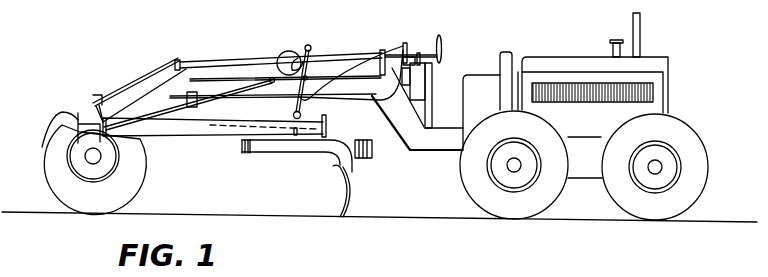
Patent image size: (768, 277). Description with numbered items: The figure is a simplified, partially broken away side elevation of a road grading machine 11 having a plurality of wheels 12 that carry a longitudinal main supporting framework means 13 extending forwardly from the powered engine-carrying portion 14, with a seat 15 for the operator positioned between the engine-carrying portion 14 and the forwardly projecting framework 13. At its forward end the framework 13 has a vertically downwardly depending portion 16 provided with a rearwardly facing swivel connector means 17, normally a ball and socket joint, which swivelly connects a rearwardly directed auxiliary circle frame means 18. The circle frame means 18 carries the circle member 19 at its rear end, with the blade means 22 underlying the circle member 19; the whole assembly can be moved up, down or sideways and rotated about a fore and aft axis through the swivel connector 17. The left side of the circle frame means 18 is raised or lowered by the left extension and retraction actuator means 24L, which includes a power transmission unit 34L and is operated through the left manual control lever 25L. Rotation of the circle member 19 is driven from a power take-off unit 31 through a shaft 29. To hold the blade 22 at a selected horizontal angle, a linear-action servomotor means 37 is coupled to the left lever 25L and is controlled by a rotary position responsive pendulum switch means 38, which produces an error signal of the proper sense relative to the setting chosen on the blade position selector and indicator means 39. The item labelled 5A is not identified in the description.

The grading machine 11 is at (508, 37).
The wheels 12 is at (92, 205).
The main supporting framework means 13 is at (215, 70).
The powered engine-carrying portion 14 is at (663, 58).
The seat 15 is at (477, 74).
The vertically downwardly depending portion 16 is at (84, 121).
The swivel connector means 17 is at (96, 118).
The circle frame means 18 is at (207, 137).
The circle member 19 is at (273, 151).
The blade means 22 is at (338, 205).
The left extension and retraction actuator means 24L is at (302, 48).
The left manual control lever 25L is at (418, 52).
The shaft 29 is at (217, 100).
The power take-off unit 31 is at (420, 88).
The power transmission unit 34L is at (283, 54).
The servomotor means 37 is at (402, 65).
The rotary position responsive pendulum switch means 38 is at (203, 85).
The blade position selector and indicator means 39 is at (403, 42).
The bracket 5A is at (196, 91).